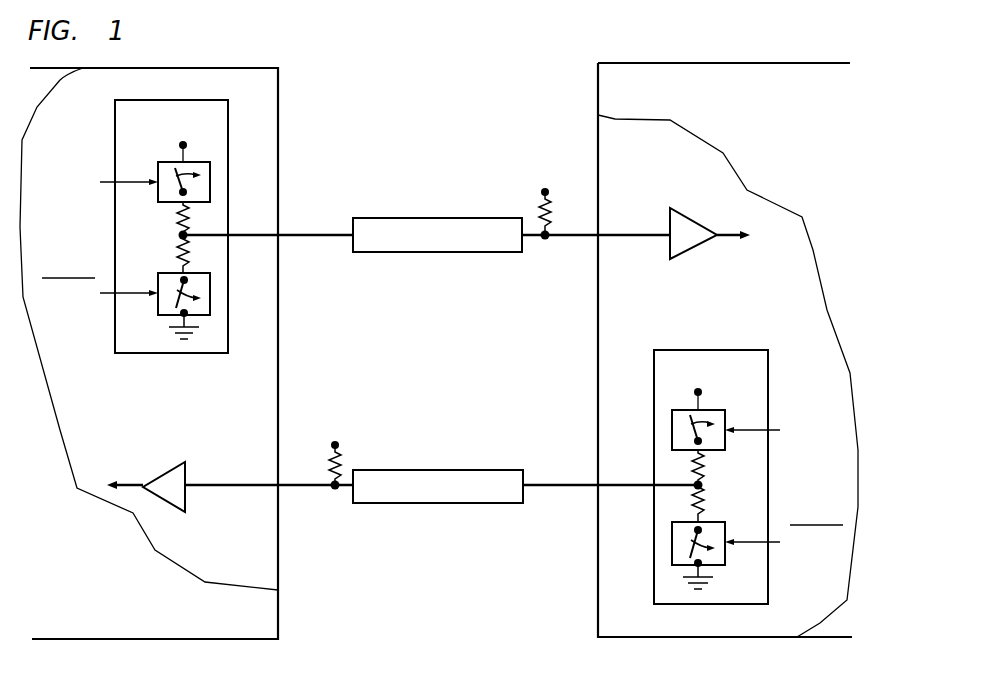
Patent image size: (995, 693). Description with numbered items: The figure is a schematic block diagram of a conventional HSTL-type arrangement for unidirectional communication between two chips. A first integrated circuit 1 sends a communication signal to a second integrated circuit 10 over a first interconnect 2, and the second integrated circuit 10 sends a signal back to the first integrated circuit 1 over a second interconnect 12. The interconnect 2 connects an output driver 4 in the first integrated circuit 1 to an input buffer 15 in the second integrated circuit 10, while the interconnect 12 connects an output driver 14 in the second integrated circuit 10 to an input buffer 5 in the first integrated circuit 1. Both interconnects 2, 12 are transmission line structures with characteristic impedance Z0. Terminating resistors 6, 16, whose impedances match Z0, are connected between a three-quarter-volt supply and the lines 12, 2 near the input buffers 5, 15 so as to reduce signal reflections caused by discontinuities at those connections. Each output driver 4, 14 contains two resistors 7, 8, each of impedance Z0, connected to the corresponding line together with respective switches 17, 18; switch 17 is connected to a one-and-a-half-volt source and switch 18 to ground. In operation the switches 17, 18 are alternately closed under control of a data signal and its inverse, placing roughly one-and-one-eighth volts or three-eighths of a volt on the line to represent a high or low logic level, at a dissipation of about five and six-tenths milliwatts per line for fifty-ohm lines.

The first integrated circuit 1 is at (227, 68).
The second integrated circuit 10 is at (687, 63).
The first interconnect 2 is at (440, 218).
The second interconnect 12 is at (468, 470).
The output driver 4 is at (390, 344).
The output driver 14 is at (690, 350).
The input buffer 5 is at (175, 468).
The input buffer 15 is at (683, 213).
The terminating resistor 6 is at (330, 470).
The terminating resistor 16 is at (540, 222).
The resistor 7 is at (190, 220).
The resistor 8 is at (195, 250).
The switch 17 is at (210, 166).
The switch 18 is at (210, 300).